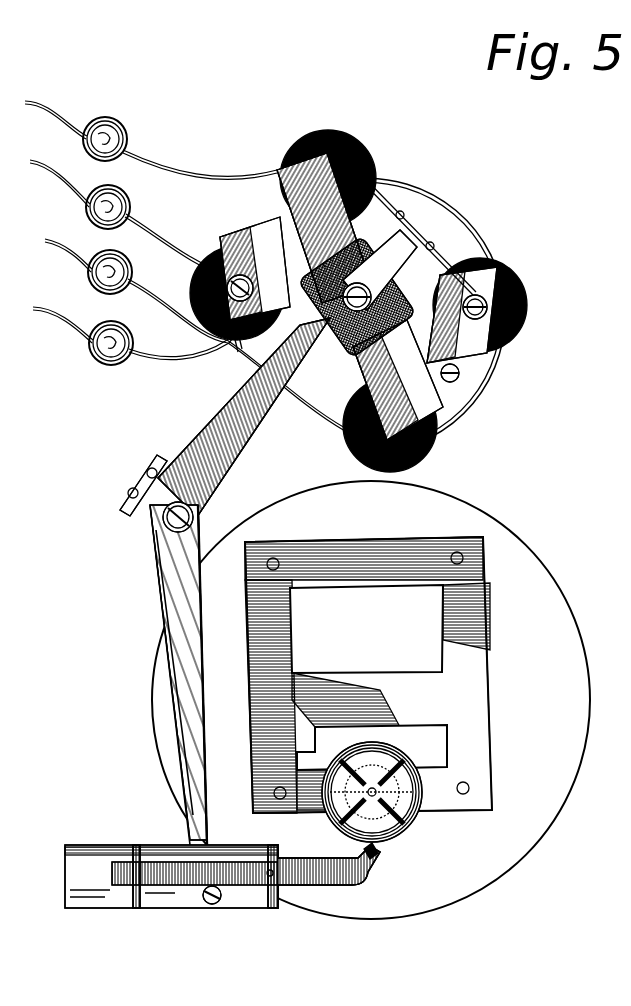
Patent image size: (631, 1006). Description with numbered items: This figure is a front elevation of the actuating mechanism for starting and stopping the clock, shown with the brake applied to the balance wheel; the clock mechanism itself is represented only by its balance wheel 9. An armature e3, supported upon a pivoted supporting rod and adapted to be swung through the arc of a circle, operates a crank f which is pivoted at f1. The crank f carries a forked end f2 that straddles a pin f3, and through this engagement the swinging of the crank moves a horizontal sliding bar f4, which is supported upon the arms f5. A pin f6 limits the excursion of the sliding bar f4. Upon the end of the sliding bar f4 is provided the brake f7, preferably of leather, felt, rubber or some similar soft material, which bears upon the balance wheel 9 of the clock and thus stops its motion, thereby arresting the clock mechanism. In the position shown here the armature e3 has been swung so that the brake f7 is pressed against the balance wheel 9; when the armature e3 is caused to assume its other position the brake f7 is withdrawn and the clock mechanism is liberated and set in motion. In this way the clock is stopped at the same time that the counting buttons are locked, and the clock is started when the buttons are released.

The armature e3 is at (398, 380).
The crank f is at (190, 557).
The pivot of the crank f1 is at (194, 519).
The forked end f2 is at (233, 890).
The pin f3 is at (193, 883).
The sliding bar f4 is at (320, 880).
The arms f5 is at (292, 838).
The pin f6 is at (283, 890).
The brake f7 is at (378, 852).
The balance wheel 9 is at (415, 820).